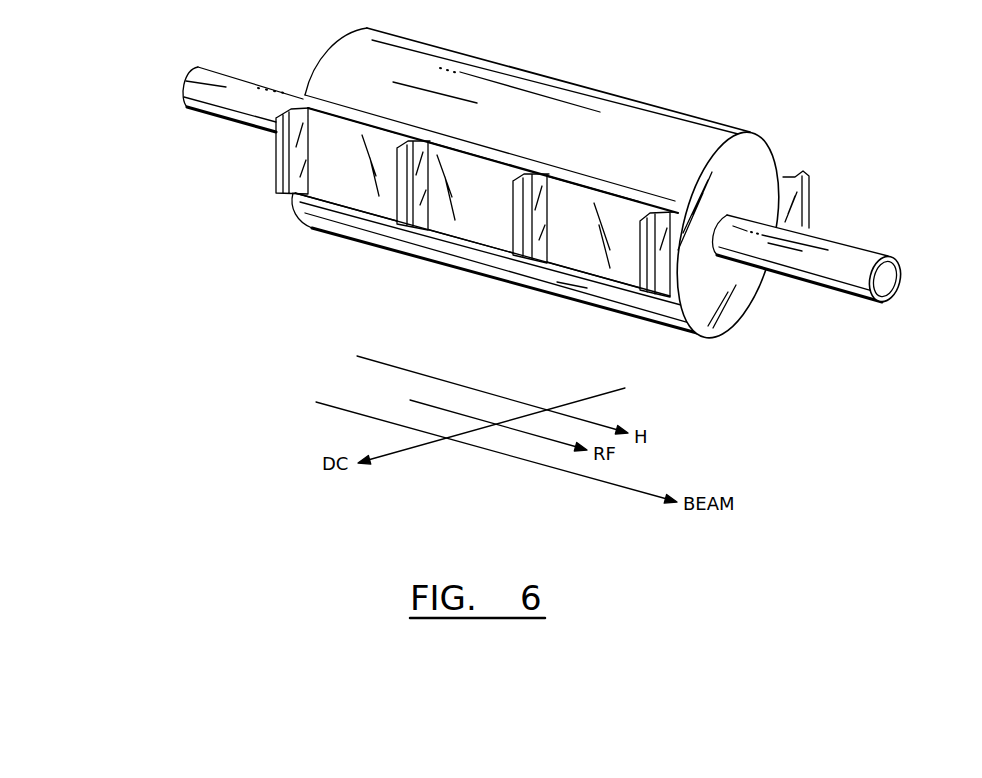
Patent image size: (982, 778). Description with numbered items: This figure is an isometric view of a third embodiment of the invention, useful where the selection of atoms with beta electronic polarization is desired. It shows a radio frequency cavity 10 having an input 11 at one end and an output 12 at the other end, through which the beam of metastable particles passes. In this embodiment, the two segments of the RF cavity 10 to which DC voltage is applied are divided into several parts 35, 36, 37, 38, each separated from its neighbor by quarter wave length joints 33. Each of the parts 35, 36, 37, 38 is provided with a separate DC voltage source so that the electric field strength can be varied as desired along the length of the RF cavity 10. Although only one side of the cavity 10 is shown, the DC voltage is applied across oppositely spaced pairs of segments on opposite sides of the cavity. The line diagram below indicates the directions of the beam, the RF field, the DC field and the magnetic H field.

The radio frequency cavity 10 is at (547, 57).
The input 11 is at (186, 78).
The output 12 is at (902, 282).
The quarter wave length joints 33 is at (276, 147).
The segment part 35 is at (755, 152).
The segment part 36 is at (338, 140).
The segment part 37 is at (465, 177).
The segment part 38 is at (573, 203).